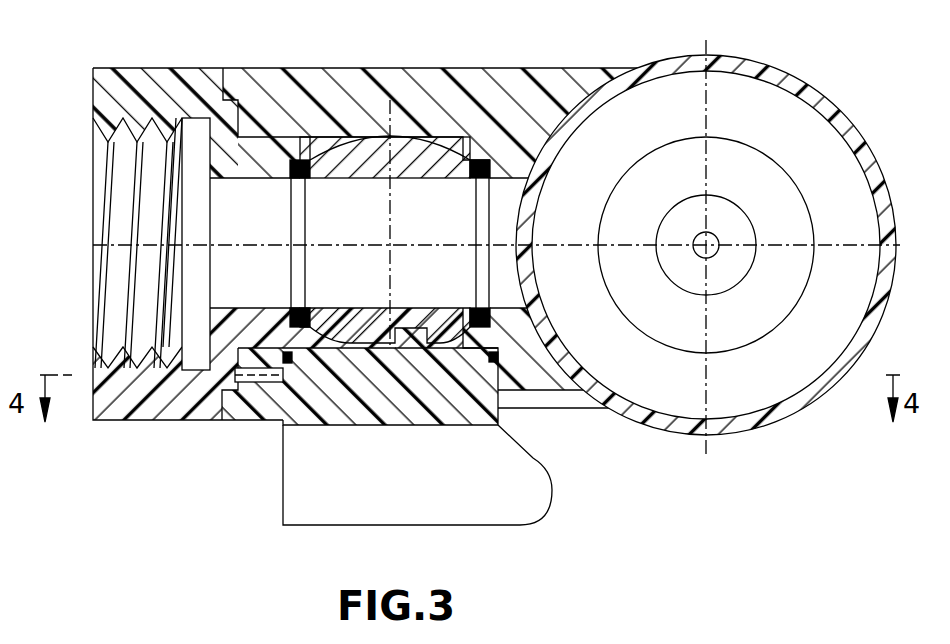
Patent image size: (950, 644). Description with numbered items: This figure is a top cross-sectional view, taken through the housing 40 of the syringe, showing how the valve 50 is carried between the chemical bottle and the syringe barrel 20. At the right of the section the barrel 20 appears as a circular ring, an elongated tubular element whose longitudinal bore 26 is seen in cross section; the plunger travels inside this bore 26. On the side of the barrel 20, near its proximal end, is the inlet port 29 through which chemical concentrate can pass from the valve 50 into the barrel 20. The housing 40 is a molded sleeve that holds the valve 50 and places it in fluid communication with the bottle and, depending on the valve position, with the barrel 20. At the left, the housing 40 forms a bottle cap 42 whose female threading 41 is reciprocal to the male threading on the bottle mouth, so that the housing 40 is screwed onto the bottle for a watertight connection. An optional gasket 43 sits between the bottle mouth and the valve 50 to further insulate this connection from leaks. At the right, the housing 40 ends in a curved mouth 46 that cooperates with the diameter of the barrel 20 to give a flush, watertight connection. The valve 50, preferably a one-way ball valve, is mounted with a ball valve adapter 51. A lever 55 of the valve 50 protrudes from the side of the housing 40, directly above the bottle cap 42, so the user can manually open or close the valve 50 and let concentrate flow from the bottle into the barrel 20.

The barrel 20 is at (783, 70).
The longitudinal bore 26 is at (815, 128).
The inlet port 29 is at (528, 282).
The housing 40 is at (275, 68).
The female threading 41 is at (103, 288).
The bottle cap 42 is at (140, 68).
The gasket 43 is at (193, 193).
The mouth 46 is at (587, 75).
The valve 50 is at (365, 200).
The ball valve adapter 51 is at (453, 147).
The lever 55 is at (297, 483).